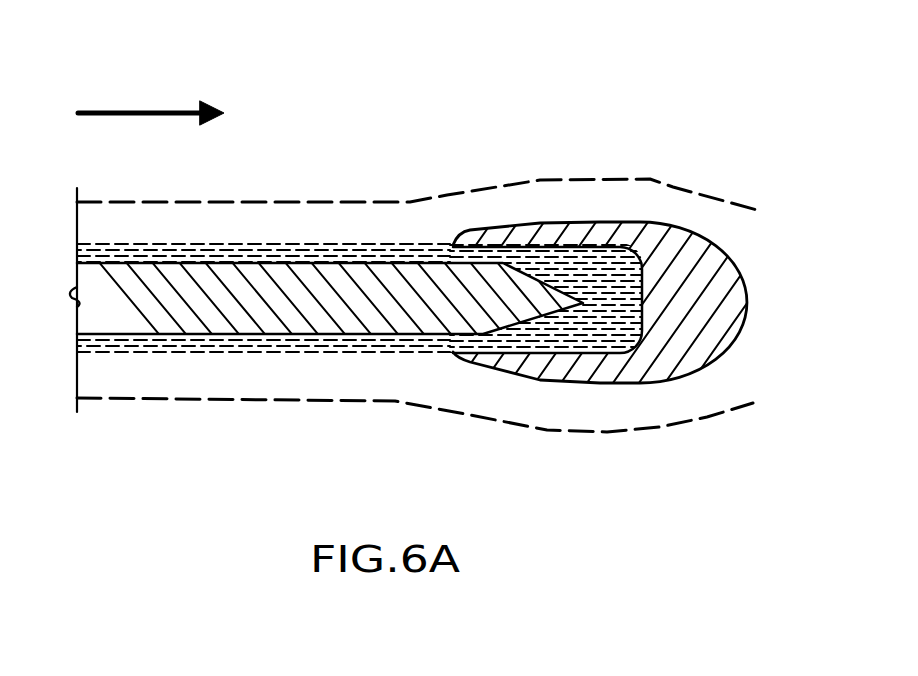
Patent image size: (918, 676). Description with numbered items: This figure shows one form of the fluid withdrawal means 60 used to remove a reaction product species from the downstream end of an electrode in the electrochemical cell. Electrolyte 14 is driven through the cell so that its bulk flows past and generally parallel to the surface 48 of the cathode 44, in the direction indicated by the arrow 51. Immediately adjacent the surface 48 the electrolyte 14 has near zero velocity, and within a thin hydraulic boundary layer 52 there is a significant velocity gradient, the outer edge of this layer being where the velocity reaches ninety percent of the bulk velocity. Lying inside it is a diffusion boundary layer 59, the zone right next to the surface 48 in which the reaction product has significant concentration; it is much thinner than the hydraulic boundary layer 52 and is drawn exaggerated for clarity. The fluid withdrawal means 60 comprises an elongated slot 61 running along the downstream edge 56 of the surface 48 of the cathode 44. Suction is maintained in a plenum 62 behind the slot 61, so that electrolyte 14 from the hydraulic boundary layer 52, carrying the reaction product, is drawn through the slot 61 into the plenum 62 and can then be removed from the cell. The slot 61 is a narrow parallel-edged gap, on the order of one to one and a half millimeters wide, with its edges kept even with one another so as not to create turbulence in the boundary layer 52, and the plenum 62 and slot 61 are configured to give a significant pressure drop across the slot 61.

The electrolyte 14 is at (407, 60).
The cathode 44 is at (120, 312).
The surface of cathode 48 is at (221, 262).
The arrows indicating velocity 51 is at (160, 110).
The hydraulic boundary layer 52 is at (585, 200).
The downstream edge 56 is at (447, 247).
The diffusion boundary layer 59 is at (333, 252).
The fluid withdrawal means 60 is at (683, 93).
The elongated slot 61 is at (437, 355).
The plenum 62 is at (613, 340).